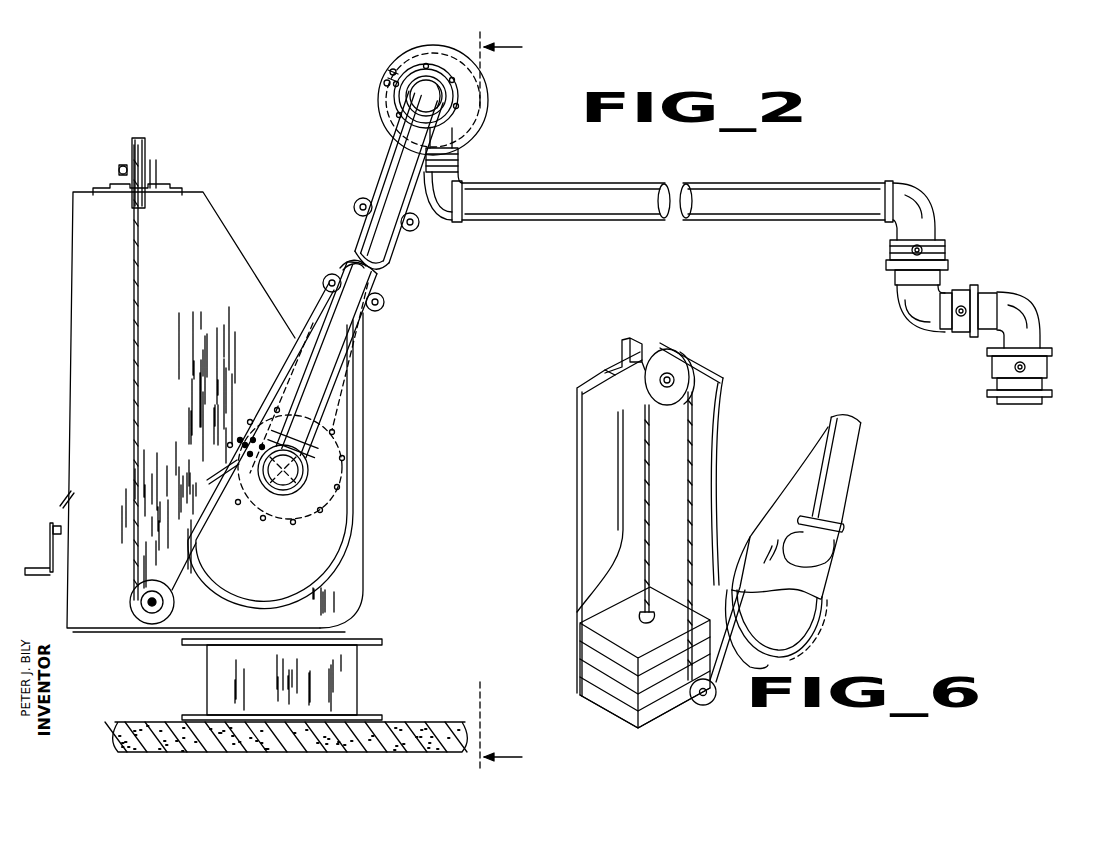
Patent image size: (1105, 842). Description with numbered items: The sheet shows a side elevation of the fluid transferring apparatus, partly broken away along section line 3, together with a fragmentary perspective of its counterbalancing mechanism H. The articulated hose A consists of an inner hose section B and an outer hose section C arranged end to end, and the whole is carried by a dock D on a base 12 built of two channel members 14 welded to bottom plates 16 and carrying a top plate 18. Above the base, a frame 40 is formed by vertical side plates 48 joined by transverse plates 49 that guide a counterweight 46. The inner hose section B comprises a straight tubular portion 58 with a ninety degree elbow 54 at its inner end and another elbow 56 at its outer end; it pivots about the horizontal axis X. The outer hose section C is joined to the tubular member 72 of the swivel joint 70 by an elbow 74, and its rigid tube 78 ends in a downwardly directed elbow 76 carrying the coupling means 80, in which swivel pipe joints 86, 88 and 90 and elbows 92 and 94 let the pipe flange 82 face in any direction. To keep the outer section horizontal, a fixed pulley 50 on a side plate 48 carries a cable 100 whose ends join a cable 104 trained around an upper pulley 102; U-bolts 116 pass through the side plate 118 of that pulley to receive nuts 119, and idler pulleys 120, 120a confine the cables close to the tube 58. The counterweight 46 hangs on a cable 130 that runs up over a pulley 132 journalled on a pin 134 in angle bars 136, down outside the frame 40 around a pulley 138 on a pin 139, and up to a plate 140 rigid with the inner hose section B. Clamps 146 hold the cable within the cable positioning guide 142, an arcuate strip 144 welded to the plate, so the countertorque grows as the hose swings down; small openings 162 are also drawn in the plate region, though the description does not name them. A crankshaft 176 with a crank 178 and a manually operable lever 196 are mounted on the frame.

In FIG. 2, the section line 3- 3 is at (501, 400).
In FIG. 2, the base 12 is at (207, 670).
In FIG. 2, the channel members 14 is at (310, 694).
In FIG. 2, the bottom plates 16 is at (205, 716).
In FIG. 2, the top plate 18 is at (325, 638).
In FIG. 2, the frame 40 is at (248, 256).
In FIG. 6, the frame 40 is at (744, 398).
In FIG. 6, the counterweight 46 is at (615, 680).
In FIG. 2, the side plates 48 is at (196, 288).
In FIG. 6, the side plates 48 is at (751, 471).
In FIG. 6, the transversely extending plates 49 is at (677, 573).
In FIG. 2, the pulley 50 is at (338, 445).
In FIG. 2, the 90° elbow 54 is at (310, 492).
In FIG. 6, the 90° elbow 54 is at (806, 551).
In FIG. 2, the 90° elbow 56 is at (418, 96).
In FIG. 2, the straight tubular portion 58 is at (400, 160).
In FIG. 6, the straight tubular portion 58 is at (832, 473).
In FIG. 2, the swivel joint 70 is at (460, 156).
In FIG. 2, the tubular member 72 is at (458, 164).
In FIG. 2, the 90 degree elbow 74 is at (441, 200).
In FIG. 2, the downwardly directed elbow 76 is at (918, 215).
In FIG. 2, the rigid tube 78 is at (728, 197).
In FIG. 2, the releasable coupling means 80 is at (1010, 293).
In FIG. 2, the pipe flange 82 is at (1018, 404).
In FIG. 2, the swivel pipe joint 86 is at (952, 259).
In FIG. 2, the swivel pipe joint 88 is at (980, 286).
In FIG. 2, the swivel pipe joint 90 is at (1052, 364).
In FIG. 2, the 90° elbow 92 is at (915, 312).
In FIG. 2, the 90° elbow 94 is at (1015, 315).
In FIG. 2, the cable 100 is at (350, 262).
In FIG. 2, the pulley 102 is at (390, 124).
In FIG. 2, the cable 104 is at (386, 170).
In FIG. 2, the U-bolts 116 is at (393, 69).
In FIG. 2, the side plate 118 is at (434, 45).
In FIG. 2, the nuts 119 is at (386, 72).
In FIG. 2, the idler pulley 120 is at (422, 293).
In FIG. 2, the idler pulley 120a is at (323, 283).
In FIG. 2, the cable 130 is at (180, 568).
In FIG. 6, the cable 130 is at (655, 633).
In FIG. 2, the pulley 132 is at (132, 152).
In FIG. 6, the pulley 132 is at (676, 366).
In FIG. 2, the pin 134 is at (119, 170).
In FIG. 6, the pin 134 is at (660, 385).
In FIG. 2, the angle bars 136 is at (118, 187).
In FIG. 6, the angle bars 136 is at (644, 348).
In FIG. 2, the pulley 138 is at (130, 609).
In FIG. 6, the pulley 138 is at (698, 705).
In FIG. 2, the pin 139 is at (150, 601).
In FIG. 6, the pin 139 is at (708, 694).
In FIG. 2, the plate 140 is at (270, 581).
In FIG. 6, the plate 140 is at (806, 580).
In FIG. 6, the cable positioning guide 142 is at (812, 623).
In FIG. 6, the strip of angle stock 144 is at (792, 637).
In FIG. 2, the clamps 146 is at (245, 445).
In FIG. 2, the holes 162 is at (340, 487).
In FIG. 2, the crankshaft 176 is at (61, 531).
In FIG. 2, the crank 178 is at (53, 550).
In FIG. 2, the manually operable lever 196 is at (64, 505).
In FIG. 2, the articulated hose A is at (490, 134).
In FIG. 2, the inner hose section B is at (352, 232).
In FIG. 6, the inner hose section B is at (855, 445).
In FIG. 2, the outer hose section C is at (806, 190).
In FIG. 2, the dock D is at (416, 722).
In FIG. 2, the counterbalancing mechanism H is at (155, 181).
In FIG. 6, the counterbalancing mechanism H is at (734, 520).
In FIG. 2, the horizontal axis X is at (283, 470).